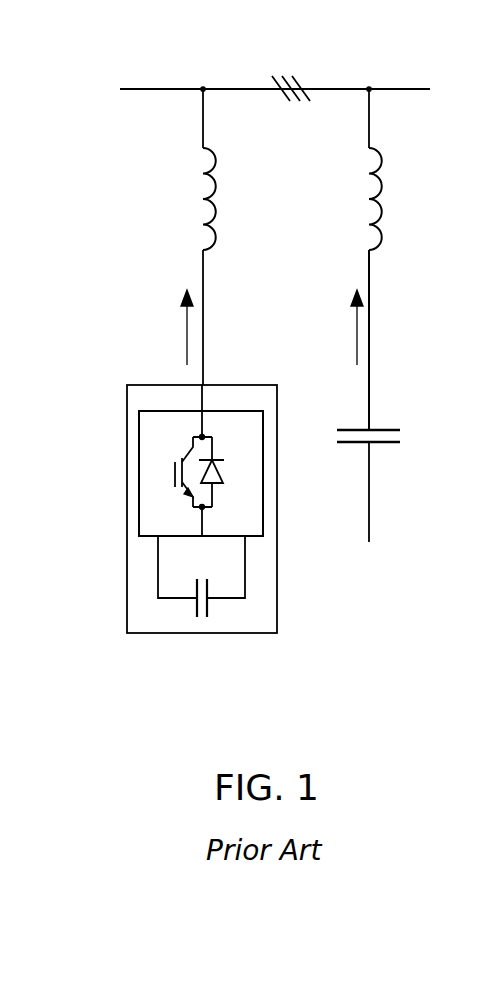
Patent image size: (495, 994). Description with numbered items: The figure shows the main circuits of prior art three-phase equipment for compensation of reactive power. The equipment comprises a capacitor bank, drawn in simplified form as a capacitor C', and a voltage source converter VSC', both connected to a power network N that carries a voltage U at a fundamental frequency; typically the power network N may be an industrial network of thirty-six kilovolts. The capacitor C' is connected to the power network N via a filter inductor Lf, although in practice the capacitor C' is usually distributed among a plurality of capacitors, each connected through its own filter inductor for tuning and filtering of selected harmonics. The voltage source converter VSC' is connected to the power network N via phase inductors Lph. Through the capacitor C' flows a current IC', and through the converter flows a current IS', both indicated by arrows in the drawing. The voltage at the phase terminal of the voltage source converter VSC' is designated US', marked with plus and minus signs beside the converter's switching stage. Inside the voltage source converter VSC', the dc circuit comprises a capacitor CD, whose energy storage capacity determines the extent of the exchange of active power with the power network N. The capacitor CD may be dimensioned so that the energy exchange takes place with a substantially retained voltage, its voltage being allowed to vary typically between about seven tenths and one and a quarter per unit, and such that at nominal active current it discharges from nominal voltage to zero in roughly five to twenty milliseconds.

The power network N is at (155, 90).
The voltage U is at (415, 91).
The phase inductor Lph is at (225, 202).
The filter inductor Lf is at (385, 202).
The converter current IS' is at (172, 327).
The capacitor current IC' is at (340, 327).
The converter phase terminal voltage US' is at (170, 463).
The voltage source converter VSC' is at (246, 520).
The capacitor CD is at (190, 613).
The capacitor C' is at (394, 396).